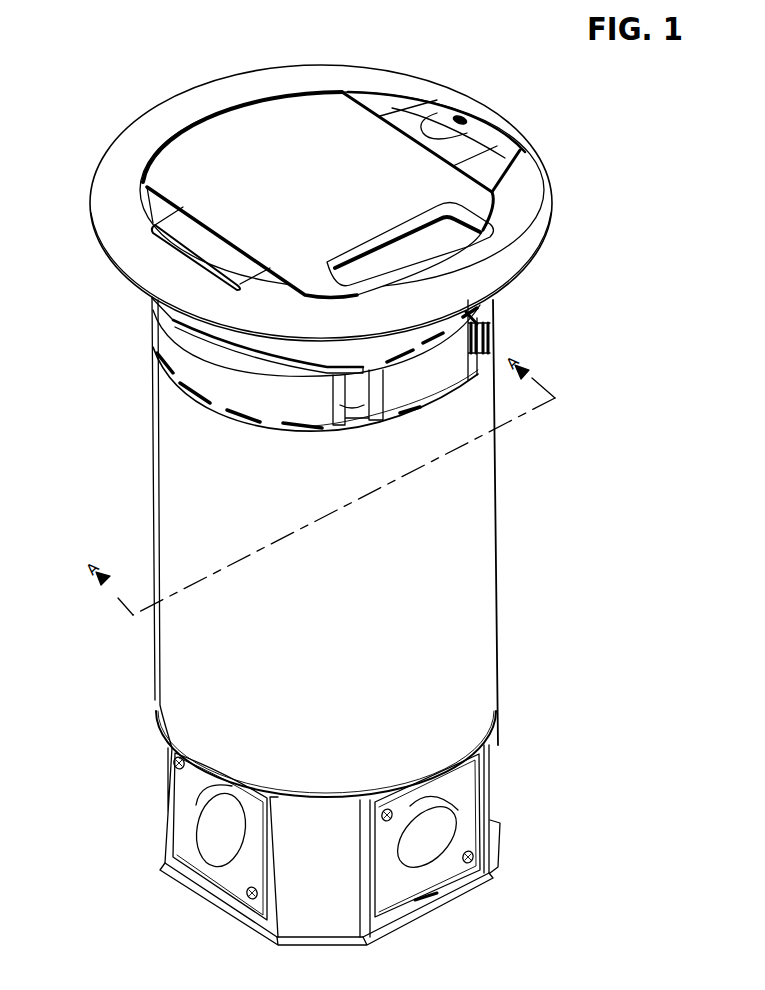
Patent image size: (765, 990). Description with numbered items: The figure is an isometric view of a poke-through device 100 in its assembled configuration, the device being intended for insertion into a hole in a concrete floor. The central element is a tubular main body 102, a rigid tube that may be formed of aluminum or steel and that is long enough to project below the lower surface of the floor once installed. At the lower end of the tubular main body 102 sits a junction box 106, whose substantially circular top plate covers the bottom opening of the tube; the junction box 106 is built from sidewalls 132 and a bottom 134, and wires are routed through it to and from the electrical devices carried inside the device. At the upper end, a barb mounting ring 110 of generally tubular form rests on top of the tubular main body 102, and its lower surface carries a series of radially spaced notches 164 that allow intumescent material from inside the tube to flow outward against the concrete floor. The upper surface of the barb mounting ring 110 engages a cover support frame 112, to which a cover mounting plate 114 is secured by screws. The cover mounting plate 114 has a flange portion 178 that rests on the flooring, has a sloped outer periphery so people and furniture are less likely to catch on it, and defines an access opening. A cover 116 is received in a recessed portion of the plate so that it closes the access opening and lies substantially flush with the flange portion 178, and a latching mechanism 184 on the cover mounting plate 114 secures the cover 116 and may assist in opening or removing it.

The poke-through device 100 is at (599, 383).
The tubular main body 102 is at (187, 547).
The junction box 106 is at (225, 906).
The barb mounting ring 110 is at (170, 342).
The cover support frame 112 is at (437, 330).
The cover mounting plate 114 is at (120, 220).
The cover 116 is at (247, 143).
The sidewalls 132 is at (170, 793).
The bottom 134 is at (437, 908).
The notches 164 is at (240, 420).
The flange portion 178 is at (140, 130).
The latching mechanism 184 is at (448, 113).